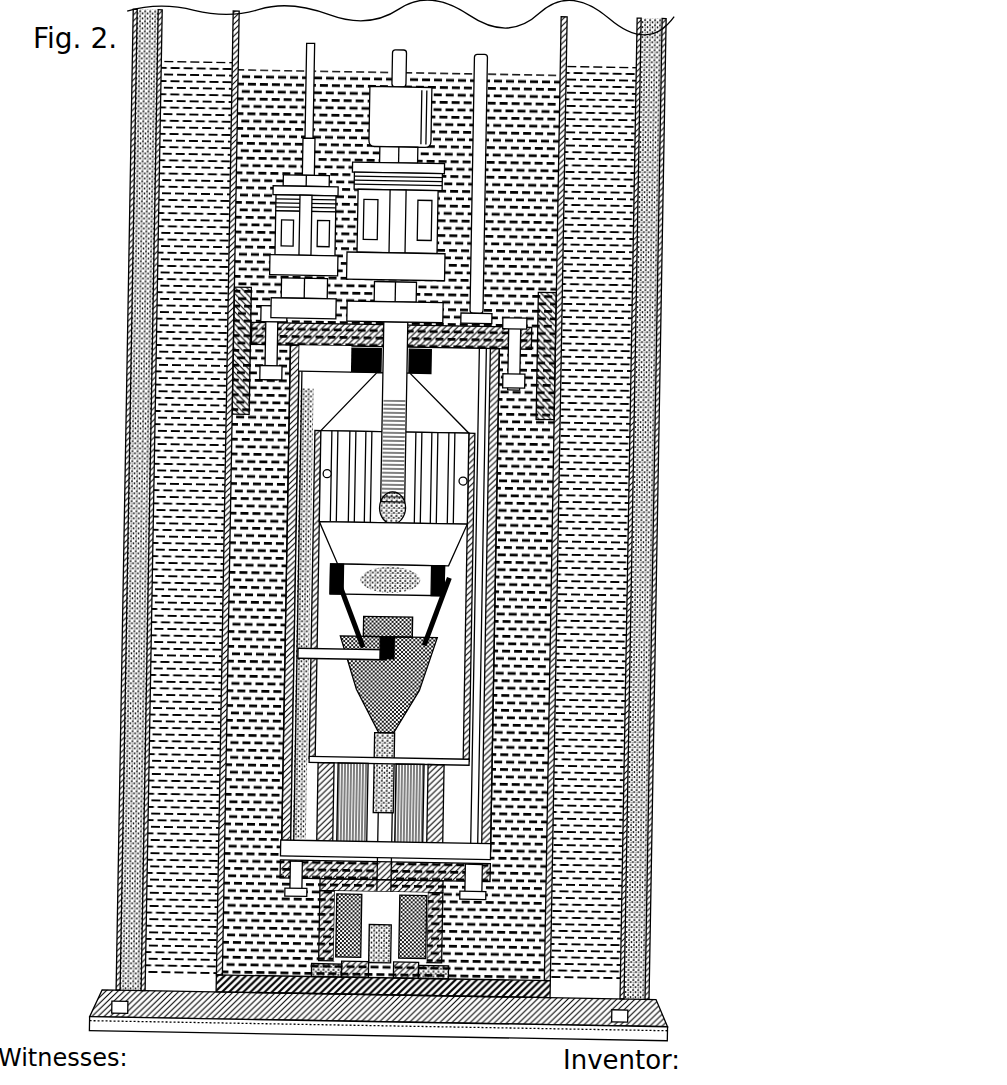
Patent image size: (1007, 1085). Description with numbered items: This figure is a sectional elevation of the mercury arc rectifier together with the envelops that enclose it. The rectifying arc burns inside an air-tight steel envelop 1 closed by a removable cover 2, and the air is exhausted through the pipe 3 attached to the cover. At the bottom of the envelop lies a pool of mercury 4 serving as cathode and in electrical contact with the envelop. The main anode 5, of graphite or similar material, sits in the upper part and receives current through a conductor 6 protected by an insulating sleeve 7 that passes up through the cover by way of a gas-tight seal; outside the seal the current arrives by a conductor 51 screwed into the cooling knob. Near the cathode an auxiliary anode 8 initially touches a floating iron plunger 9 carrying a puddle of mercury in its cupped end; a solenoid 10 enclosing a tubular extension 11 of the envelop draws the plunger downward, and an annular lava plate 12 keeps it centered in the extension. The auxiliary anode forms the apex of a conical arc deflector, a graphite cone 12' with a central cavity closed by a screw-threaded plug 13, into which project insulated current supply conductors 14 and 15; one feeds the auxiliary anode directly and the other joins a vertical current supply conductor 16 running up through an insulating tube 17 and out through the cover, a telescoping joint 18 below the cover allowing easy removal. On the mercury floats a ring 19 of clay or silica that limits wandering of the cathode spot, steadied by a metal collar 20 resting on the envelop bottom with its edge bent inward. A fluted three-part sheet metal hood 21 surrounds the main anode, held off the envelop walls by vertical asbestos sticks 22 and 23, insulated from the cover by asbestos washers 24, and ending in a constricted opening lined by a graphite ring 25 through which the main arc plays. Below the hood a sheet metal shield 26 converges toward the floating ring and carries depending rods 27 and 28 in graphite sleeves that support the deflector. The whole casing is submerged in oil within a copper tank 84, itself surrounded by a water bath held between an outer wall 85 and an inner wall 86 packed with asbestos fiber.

The metal envelop 1 is at (480, 639).
The removable cover 2 is at (480, 348).
The pipe 3 is at (480, 64).
The pool of mercury 4 is at (560, 836).
The main anode 5 is at (390, 520).
The conductor 6 is at (382, 404).
The insulating sleeve 7 is at (404, 401).
The auxiliary anode 8 is at (375, 755).
The floating iron plunger 9 is at (396, 828).
The solenoid 10 is at (406, 1000).
The tubular extension 11 is at (380, 1010).
The annular lava plate 12 is at (381, 808).
The graphite cone 12' is at (363, 682).
The screw-threaded plug 13 is at (393, 620).
The current supply conductor 14 is at (410, 708).
The current supply conductor 15 is at (352, 696).
The vertical current supply conductor 16 is at (306, 584).
The insulating tube 17 is at (300, 551).
The telescoping joint 18 is at (305, 372).
The floating ring 19 is at (424, 765).
The metal collar 20 is at (496, 798).
The sheet metal hood 21 is at (482, 500).
The asbestos stick 22 is at (463, 378).
The asbestos stick 23 is at (317, 401).
The asbestos washers 24 is at (428, 378).
The graphite ring 25 is at (395, 568).
The sheet metal shield 26 is at (480, 707).
The depending rod 27 is at (448, 628).
The depending rod 28 is at (341, 612).
The conductor 51 is at (399, 62).
The metal tank 84 is at (559, 901).
The outer wall 85 is at (662, 923).
The inner wall 86 is at (659, 956).